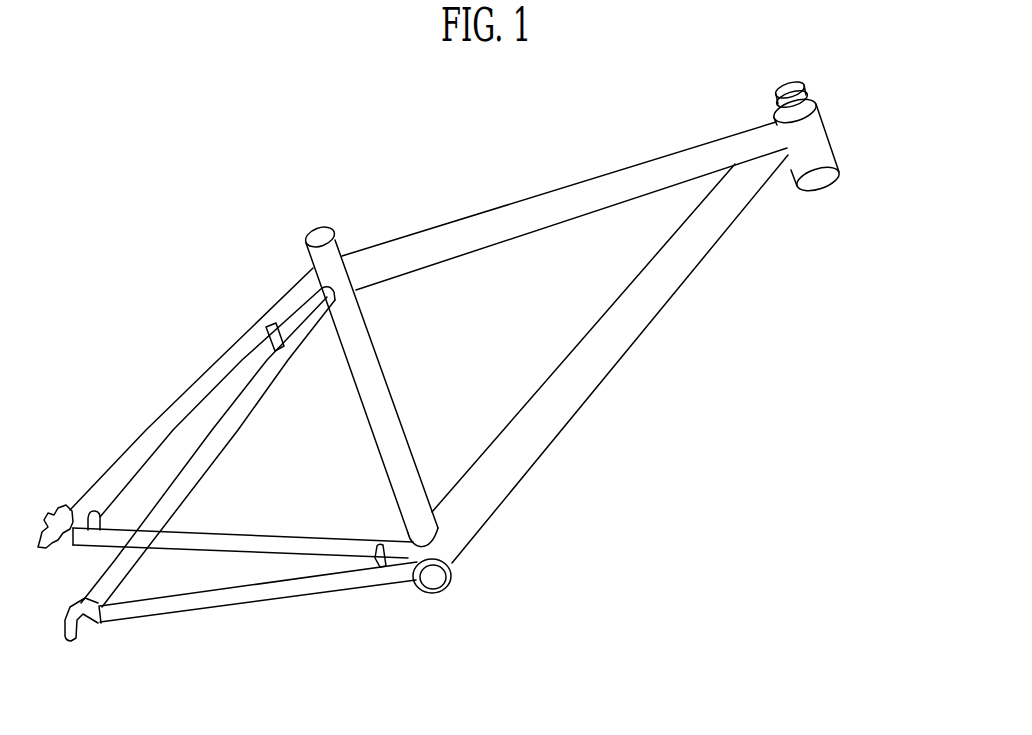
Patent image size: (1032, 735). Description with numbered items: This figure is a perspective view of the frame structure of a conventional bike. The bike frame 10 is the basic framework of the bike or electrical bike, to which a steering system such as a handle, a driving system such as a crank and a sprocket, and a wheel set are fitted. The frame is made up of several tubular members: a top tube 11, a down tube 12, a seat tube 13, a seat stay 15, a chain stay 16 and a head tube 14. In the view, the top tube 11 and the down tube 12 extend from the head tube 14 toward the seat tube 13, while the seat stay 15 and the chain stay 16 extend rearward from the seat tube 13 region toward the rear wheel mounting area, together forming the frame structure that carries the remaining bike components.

The bike frame 10 is at (190, 152).
The top tube 11 is at (535, 210).
The down tube 12 is at (603, 365).
The seat tube 13 is at (388, 383).
The head tube 14 is at (816, 142).
The seat stay 15 is at (197, 384).
The chain stay 16 is at (268, 593).